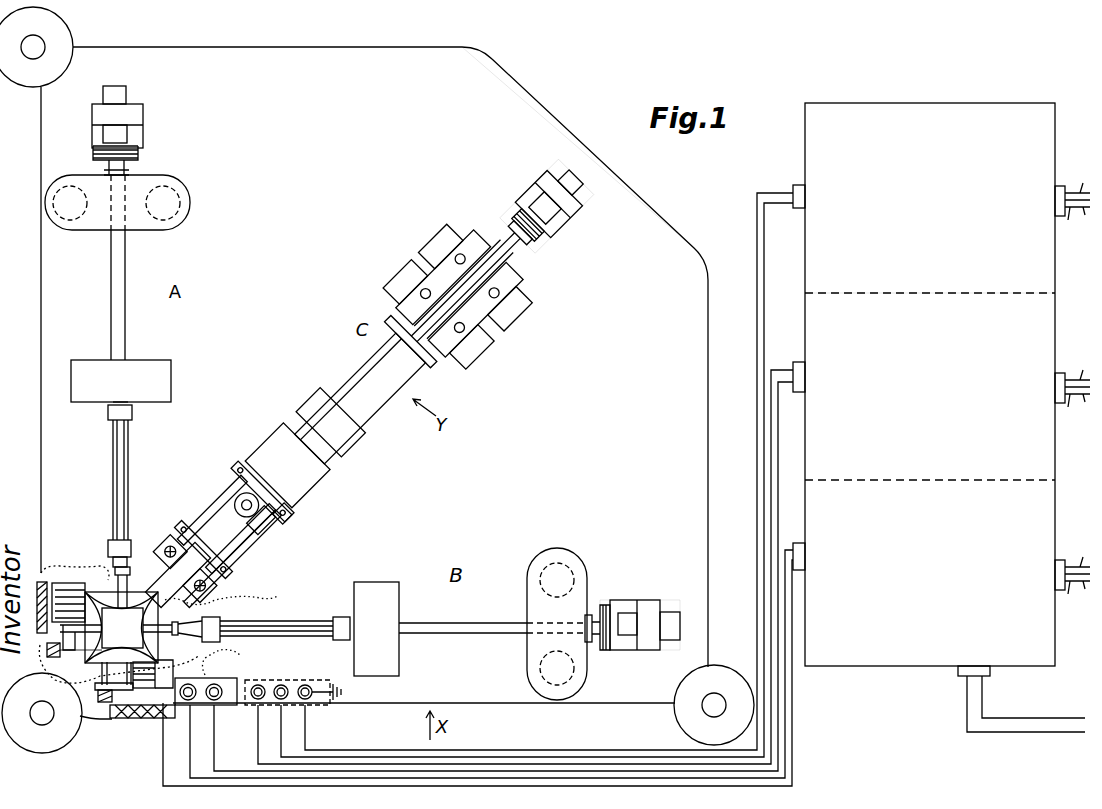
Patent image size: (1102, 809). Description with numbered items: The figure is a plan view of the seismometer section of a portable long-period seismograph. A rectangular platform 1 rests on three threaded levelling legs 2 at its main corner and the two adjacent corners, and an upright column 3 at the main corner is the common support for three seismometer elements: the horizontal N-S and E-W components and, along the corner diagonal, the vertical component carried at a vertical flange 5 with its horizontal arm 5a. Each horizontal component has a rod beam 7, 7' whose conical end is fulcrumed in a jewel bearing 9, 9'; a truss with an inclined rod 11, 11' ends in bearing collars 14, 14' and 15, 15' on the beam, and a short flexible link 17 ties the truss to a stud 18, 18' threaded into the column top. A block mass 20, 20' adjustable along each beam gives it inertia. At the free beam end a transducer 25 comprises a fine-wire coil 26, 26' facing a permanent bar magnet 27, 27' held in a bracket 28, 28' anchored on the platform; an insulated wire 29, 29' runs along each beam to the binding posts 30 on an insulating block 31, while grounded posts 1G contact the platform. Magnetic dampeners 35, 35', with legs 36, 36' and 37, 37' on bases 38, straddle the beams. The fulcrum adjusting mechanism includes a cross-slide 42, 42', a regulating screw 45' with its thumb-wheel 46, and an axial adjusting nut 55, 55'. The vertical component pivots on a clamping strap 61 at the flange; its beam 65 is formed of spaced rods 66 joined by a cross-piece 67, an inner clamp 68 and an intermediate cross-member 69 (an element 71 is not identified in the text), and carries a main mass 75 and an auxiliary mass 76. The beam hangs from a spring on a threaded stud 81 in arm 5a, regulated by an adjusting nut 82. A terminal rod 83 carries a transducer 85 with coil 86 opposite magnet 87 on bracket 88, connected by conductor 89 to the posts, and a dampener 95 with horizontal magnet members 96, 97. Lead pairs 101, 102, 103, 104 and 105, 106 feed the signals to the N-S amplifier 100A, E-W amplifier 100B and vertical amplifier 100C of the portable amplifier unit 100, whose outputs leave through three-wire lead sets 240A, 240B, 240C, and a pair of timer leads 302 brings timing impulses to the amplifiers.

The platform 1 is at (548, 114).
The supporting legs 2 is at (62, 742).
The column 3 is at (144, 613).
The vertical flange 5 is at (160, 568).
The horizontal arm 5a is at (242, 553).
The beam 7 is at (463, 641).
The beam 7' is at (104, 295).
The jewel bearing 9 is at (172, 617).
The jewel bearing 9' is at (131, 584).
The rod 11 is at (276, 640).
The rod 11' is at (101, 480).
The bearing collar 14 is at (276, 616).
The bearing collar 14' is at (105, 545).
The bearing collar 15 is at (335, 616).
The bearing collar 15' is at (101, 412).
The flexible link 17 is at (210, 617).
The stud 18 is at (126, 629).
The stud 18' is at (122, 628).
The mass 20 is at (376, 616).
The mass 20' is at (124, 367).
The transducer means 25 is at (636, 575).
The coil 26 is at (608, 643).
The coil 26' is at (139, 132).
The permanent bar magnet 27 is at (679, 614).
The permanent bar magnet 27' is at (133, 92).
The supporting bracket 28 is at (635, 640).
The supporting bracket 28' is at (89, 131).
The insulated wire 29 is at (224, 661).
The conductor 29' is at (85, 697).
The binding posts 30 is at (246, 706).
The insulating block 31 is at (242, 681).
The magnetic dampener 35 is at (557, 605).
The magnetic dampener 35' is at (117, 206).
The magnet leg 36 is at (535, 580).
The magnet leg 36' is at (68, 186).
The magnet leg 37 is at (535, 668).
The magnet leg 37' is at (176, 188).
The base 38 is at (586, 690).
The cross-slide 42 is at (163, 674).
The cross-slide 42' is at (77, 605).
The regulating screw 45' is at (118, 621).
The thumb-wheel 46 is at (131, 720).
The adjusting nut 55 is at (74, 659).
The adjusting nut 55' is at (109, 696).
The clamping strap 61 is at (165, 545).
The main beam 65 is at (346, 357).
The rods 66 is at (228, 478).
The cross-piece 67 is at (418, 346).
The two-part strap or clamp 68 is at (235, 505).
The cross-member 69 is at (290, 516).
The plate 71 is at (190, 537).
The main mass block 75 is at (310, 488).
The auxiliary mass 76 is at (354, 441).
The threaded stud 81 is at (270, 527).
The adjusting nut 82 is at (240, 480).
The terminal rod 83 is at (512, 250).
The transducer means 85 is at (518, 166).
The coil 86 is at (510, 212).
The permanent magnet 87 is at (563, 227).
The supporting bracket 88 is at (586, 207).
The conductor 89 is at (258, 598).
The dampener means 95 is at (417, 245).
The magnet member 96 is at (404, 278).
The magnet member 97 is at (445, 236).
The portable amplifier unit 100 is at (848, 94).
The N-S amplifier 100A is at (905, 663).
The E-W amplifier 100B is at (897, 107).
The vertical amplifier 100C is at (930, 319).
The lead 101 is at (796, 707).
The lead 102 is at (796, 736).
The lead 103 is at (757, 292).
The lead 104 is at (763, 319).
The lead 105 is at (771, 464).
The lead 106 is at (771, 510).
The set of three leads 240A is at (1076, 547).
The set of three leads 240B is at (1076, 172).
The set of three leads 240C is at (1076, 360).
The timer leads 302 is at (1022, 733).
The grounded binding posts 1G is at (302, 685).